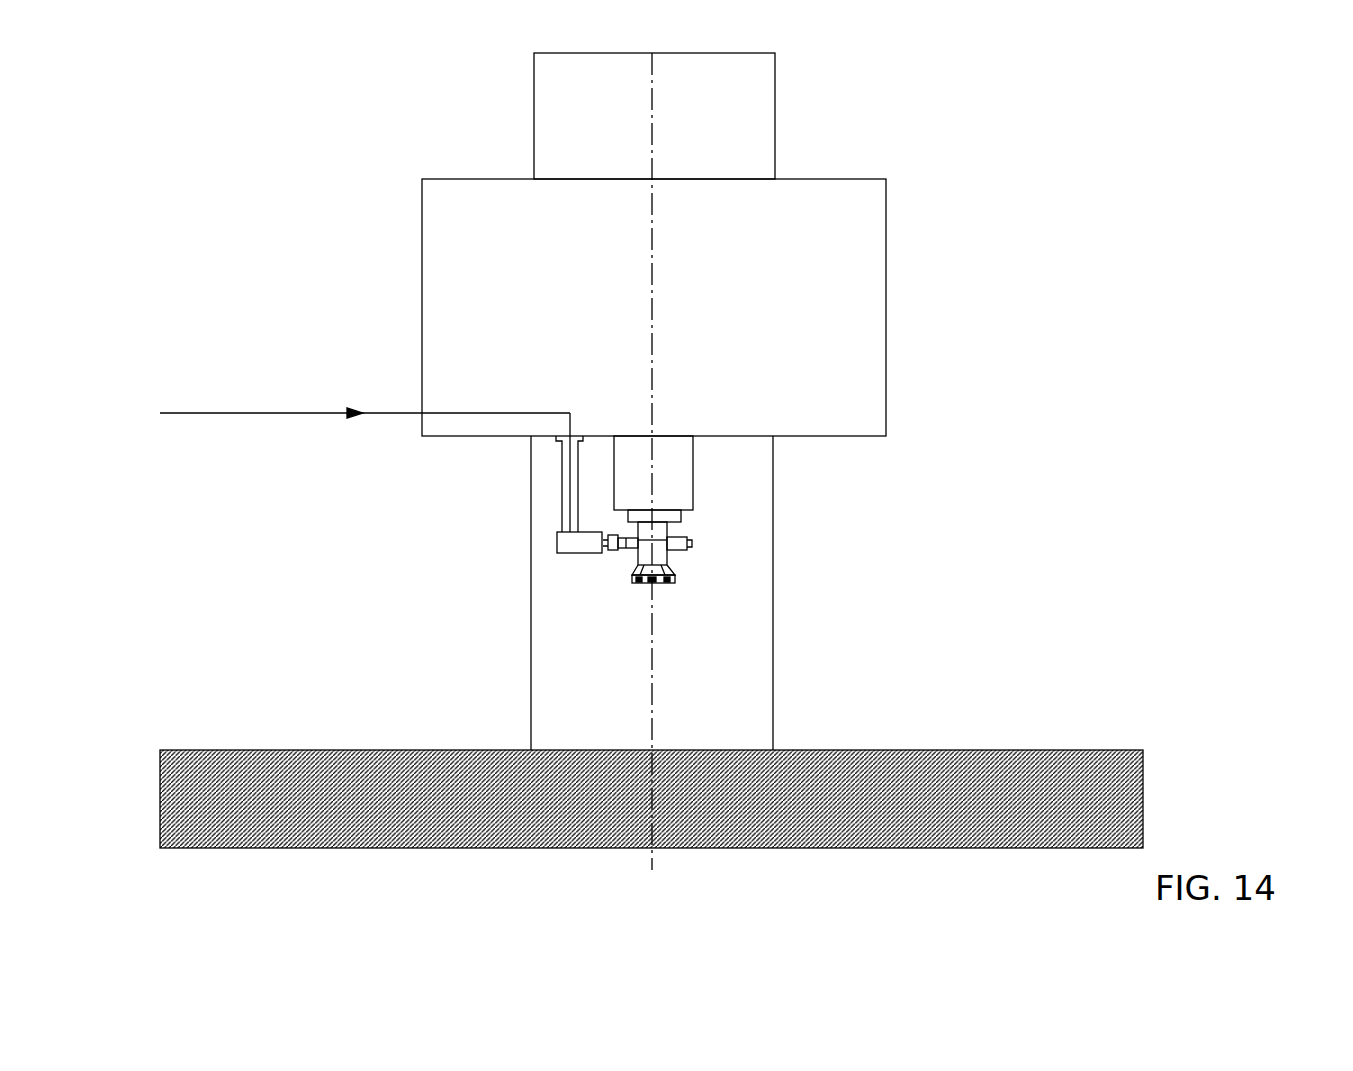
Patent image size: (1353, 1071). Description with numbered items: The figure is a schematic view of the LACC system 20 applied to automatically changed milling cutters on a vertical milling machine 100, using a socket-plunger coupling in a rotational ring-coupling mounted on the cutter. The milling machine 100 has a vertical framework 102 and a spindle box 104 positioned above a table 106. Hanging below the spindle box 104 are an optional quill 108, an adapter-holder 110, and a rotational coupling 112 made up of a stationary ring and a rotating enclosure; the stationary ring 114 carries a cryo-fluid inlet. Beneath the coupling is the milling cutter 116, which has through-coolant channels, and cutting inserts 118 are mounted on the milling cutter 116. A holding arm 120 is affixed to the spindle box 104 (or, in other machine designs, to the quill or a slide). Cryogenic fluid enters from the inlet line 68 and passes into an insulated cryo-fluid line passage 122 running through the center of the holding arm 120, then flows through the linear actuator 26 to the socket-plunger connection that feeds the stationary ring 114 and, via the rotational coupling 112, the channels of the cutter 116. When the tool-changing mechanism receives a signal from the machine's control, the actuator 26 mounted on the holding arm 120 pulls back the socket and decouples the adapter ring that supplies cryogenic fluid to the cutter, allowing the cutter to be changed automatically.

The vertical milling machine 100 is at (1098, 126).
The vertical framework 102 is at (775, 96).
The spindle box 104 is at (886, 272).
The table 106 is at (1143, 786).
The quill 108 is at (693, 460).
The adapter-holder 110 is at (681, 514).
The rotational coupling 112 is at (692, 541).
The stationary ring 114 is at (678, 551).
The milling cutter 116 is at (672, 580).
The cutting inserts 118 is at (660, 586).
The holding arm 120 is at (562, 463).
The insulated cryo-fluid line passage 122 is at (570, 500).
The linear actuator 26 is at (577, 555).
The LACC system 20 is at (475, 642).
The inlet line 68 is at (303, 412).